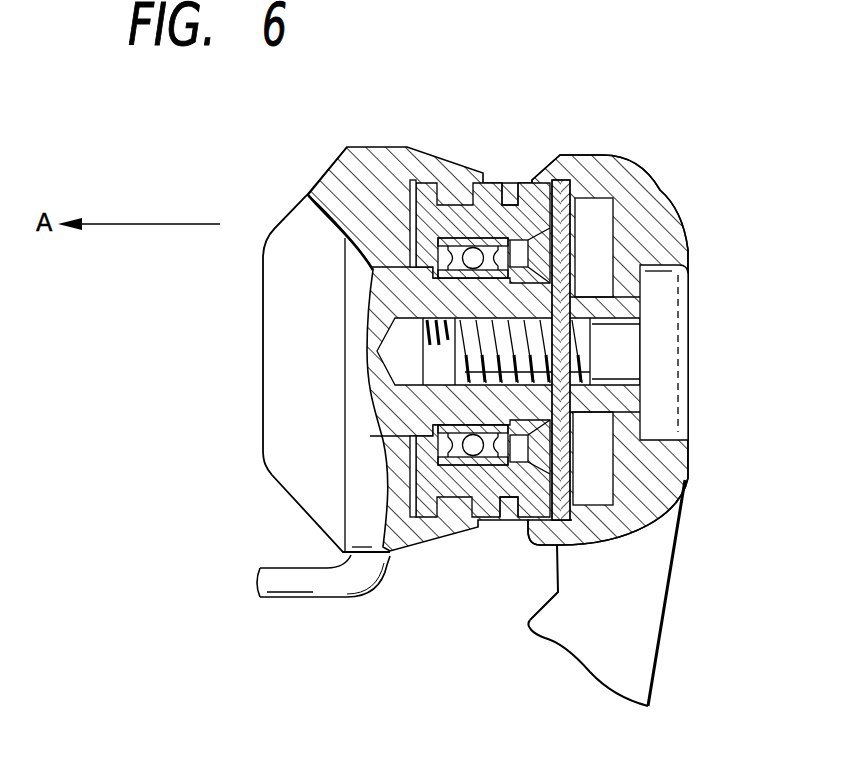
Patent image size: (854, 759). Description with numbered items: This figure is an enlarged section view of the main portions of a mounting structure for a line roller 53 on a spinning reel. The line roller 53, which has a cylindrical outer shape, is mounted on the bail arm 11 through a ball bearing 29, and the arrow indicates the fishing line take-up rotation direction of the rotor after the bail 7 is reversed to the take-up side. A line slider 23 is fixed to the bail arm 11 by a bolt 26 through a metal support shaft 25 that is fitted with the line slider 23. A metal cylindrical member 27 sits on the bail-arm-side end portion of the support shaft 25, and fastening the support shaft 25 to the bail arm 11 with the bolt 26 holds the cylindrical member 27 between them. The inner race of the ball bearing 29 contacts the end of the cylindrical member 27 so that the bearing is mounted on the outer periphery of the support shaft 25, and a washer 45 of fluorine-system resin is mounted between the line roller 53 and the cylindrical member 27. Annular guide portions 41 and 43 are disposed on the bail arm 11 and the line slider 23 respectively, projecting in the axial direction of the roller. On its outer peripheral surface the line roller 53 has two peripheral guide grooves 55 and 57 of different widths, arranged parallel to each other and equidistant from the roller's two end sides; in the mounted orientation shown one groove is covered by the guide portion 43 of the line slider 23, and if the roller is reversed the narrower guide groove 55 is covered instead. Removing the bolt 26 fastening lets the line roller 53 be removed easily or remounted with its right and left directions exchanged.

The bail 7 is at (265, 587).
The bail arm 11 is at (655, 628).
The line slider 23 is at (290, 467).
The support shaft 25 is at (377, 290).
The bolt 26 is at (670, 353).
The cylindrical member 27 is at (563, 462).
The ball bearing 29 is at (424, 447).
The guide portion 41 is at (533, 170).
The guide portion 43 is at (482, 170).
The washer 45 is at (572, 222).
The line roller 53 is at (400, 196).
The guide groove 55 is at (510, 172).
The guide groove 57 is at (478, 168).